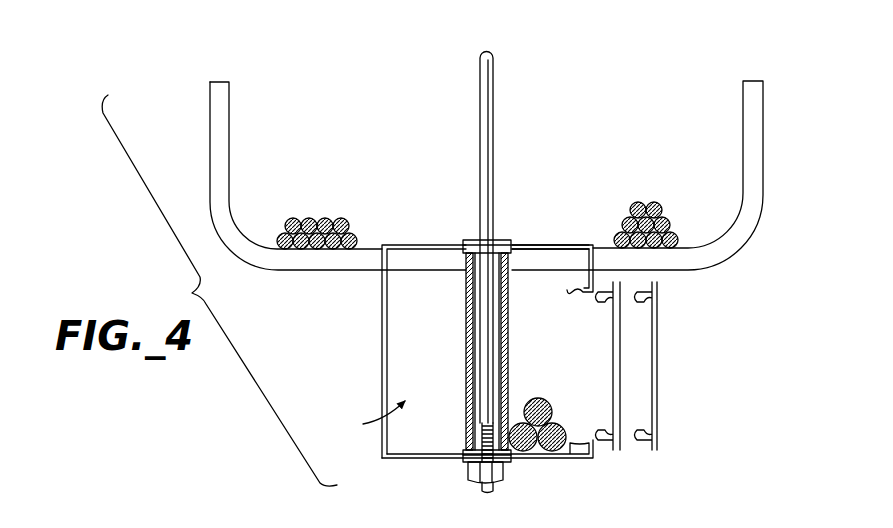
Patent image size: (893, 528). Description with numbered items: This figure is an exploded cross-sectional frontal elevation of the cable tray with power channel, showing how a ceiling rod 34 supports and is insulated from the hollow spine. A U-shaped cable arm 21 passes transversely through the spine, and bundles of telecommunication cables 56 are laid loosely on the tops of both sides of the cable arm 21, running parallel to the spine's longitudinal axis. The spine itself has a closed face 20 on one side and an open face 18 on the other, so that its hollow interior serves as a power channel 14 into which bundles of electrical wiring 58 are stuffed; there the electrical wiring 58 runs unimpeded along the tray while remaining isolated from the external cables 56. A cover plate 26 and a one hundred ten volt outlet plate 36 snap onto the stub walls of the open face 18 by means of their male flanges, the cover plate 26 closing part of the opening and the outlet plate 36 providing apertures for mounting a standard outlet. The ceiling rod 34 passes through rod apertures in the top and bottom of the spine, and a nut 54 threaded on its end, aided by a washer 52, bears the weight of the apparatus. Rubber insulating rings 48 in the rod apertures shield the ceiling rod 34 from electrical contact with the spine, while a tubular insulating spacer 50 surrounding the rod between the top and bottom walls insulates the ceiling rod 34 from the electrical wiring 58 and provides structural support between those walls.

The power channel 14 is at (371, 419).
The open face 18 is at (595, 250).
The closed face 20 is at (381, 348).
The cable arm 21 is at (752, 125).
The cover plate 26 is at (615, 318).
The ceiling rod 34 is at (486, 88).
The 110 V outlet plate 36 is at (657, 363).
The insulating ring 48 is at (505, 238).
The tubular insulating spacer 50 is at (468, 320).
The washer 52 is at (468, 466).
The nut 54 is at (493, 483).
The cables 56 is at (309, 219).
The electrical wiring 58 is at (540, 395).